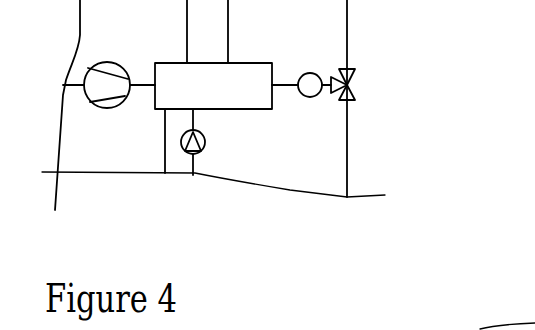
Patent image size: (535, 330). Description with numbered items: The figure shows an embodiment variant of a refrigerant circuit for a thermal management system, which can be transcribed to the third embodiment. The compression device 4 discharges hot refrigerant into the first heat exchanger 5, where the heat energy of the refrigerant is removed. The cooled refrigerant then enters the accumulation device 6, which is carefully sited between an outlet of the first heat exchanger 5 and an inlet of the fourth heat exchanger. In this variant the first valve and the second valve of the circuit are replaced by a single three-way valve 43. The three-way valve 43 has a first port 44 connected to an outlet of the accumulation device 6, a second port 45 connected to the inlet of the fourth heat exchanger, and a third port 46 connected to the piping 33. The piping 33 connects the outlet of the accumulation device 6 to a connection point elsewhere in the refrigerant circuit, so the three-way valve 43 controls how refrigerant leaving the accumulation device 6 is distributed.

The compression device 4 is at (107, 108).
The first heat exchanger 5 is at (215, 99).
The accumulation device 6 is at (308, 98).
The piping 33 is at (350, 176).
The three-way valve 43 is at (400, 98).
The first port 44 is at (357, 85).
The second port 45 is at (347, 67).
The third port 46 is at (352, 100).